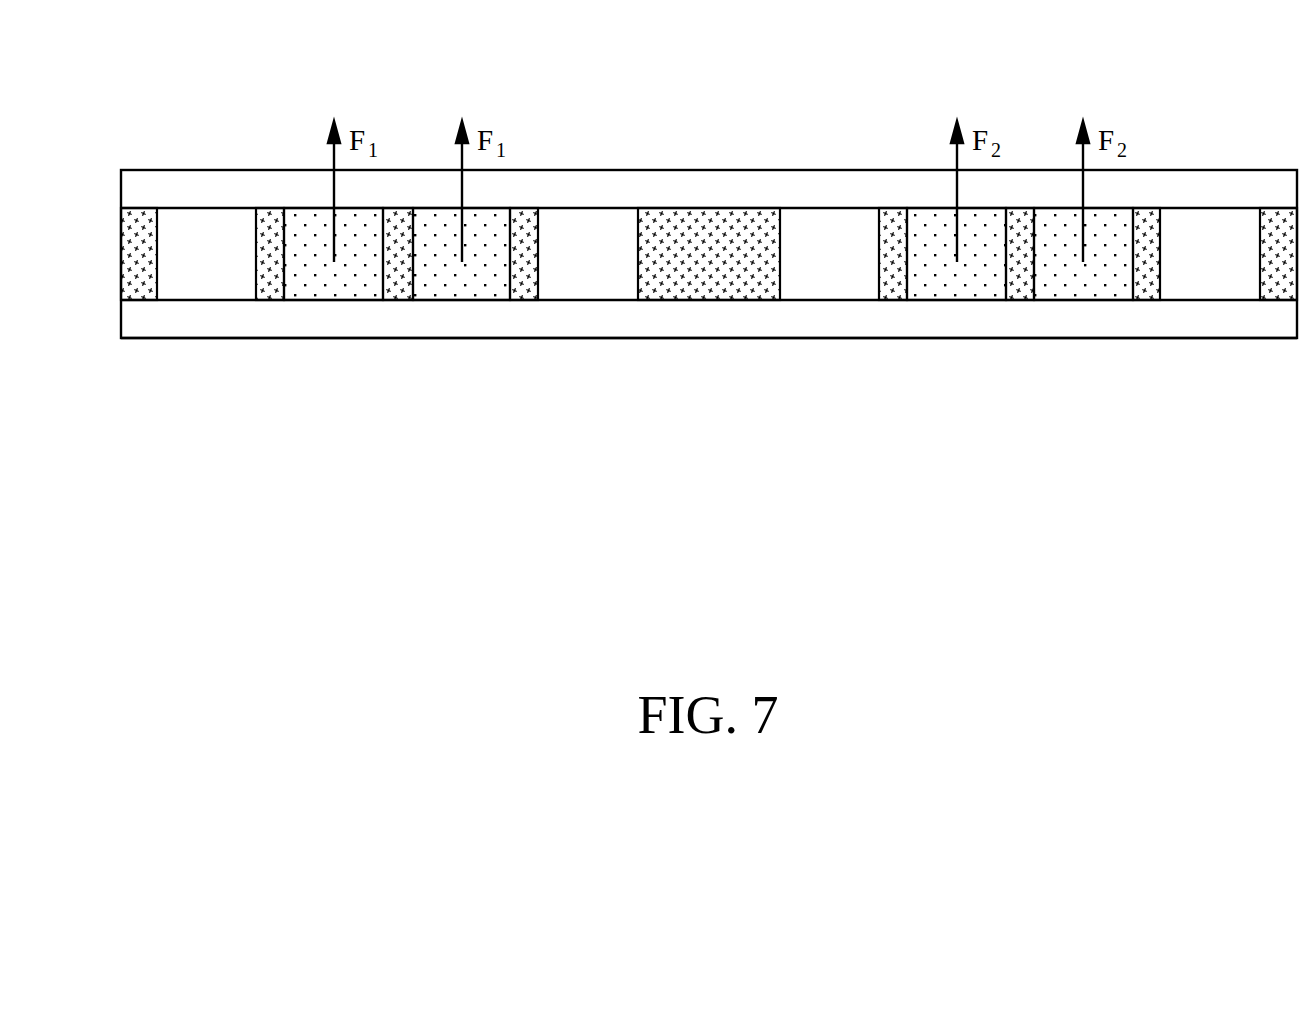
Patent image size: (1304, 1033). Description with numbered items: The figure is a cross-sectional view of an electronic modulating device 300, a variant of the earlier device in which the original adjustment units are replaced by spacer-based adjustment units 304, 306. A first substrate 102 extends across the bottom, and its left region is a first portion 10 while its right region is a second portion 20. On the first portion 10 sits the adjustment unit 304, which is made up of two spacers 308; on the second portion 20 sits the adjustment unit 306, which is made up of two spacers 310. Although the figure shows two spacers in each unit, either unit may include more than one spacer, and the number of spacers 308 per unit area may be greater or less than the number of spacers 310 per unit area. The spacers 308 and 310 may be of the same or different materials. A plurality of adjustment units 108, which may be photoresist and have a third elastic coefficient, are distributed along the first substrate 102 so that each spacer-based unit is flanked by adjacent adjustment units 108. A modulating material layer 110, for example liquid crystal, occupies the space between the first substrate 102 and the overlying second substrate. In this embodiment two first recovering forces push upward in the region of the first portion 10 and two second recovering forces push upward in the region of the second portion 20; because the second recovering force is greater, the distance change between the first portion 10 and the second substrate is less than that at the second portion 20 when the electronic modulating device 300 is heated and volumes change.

The electronic modulating device 300 is at (103, 95).
The first portion 10 is at (152, 99).
The second portion 20 is at (773, 99).
The first substrate 102 is at (137, 318).
The adjustment unit 108 is at (205, 296).
The modulating material layer 110 is at (148, 296).
The adjustment unit 304 is at (485, 457).
The adjustment unit 306 is at (1107, 457).
The spacer 308 is at (333, 296).
The spacer 310 is at (955, 296).